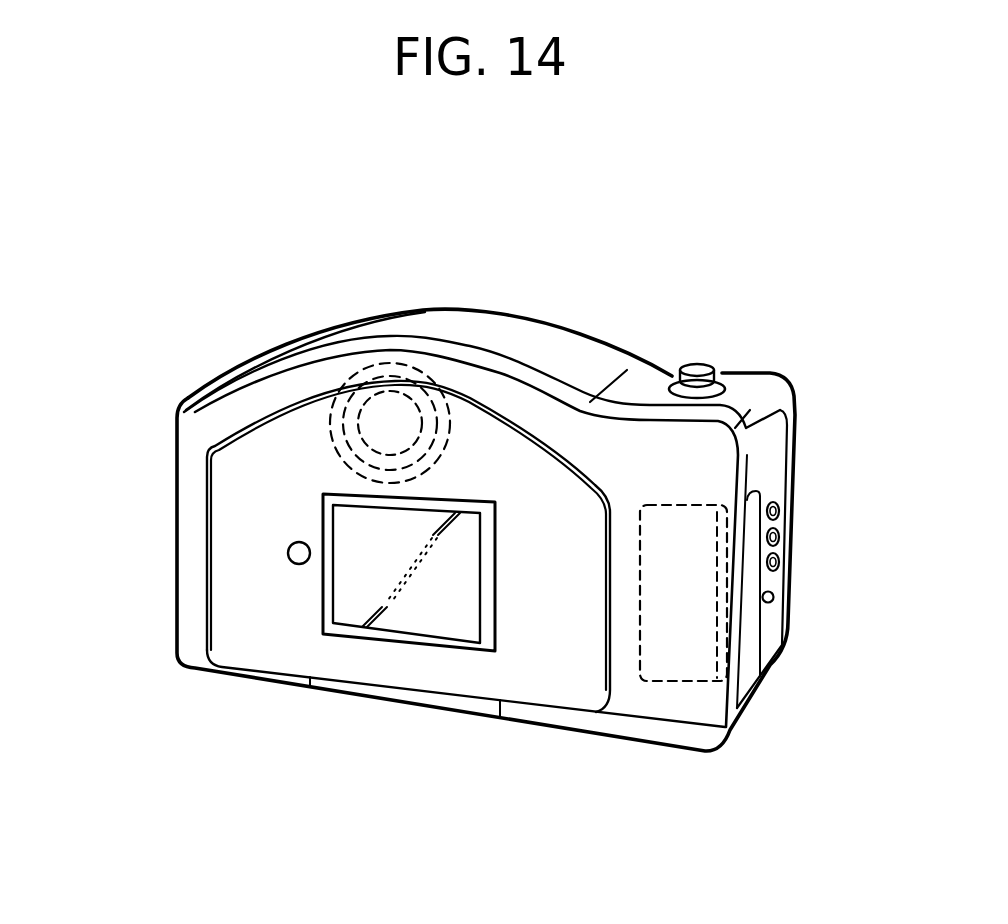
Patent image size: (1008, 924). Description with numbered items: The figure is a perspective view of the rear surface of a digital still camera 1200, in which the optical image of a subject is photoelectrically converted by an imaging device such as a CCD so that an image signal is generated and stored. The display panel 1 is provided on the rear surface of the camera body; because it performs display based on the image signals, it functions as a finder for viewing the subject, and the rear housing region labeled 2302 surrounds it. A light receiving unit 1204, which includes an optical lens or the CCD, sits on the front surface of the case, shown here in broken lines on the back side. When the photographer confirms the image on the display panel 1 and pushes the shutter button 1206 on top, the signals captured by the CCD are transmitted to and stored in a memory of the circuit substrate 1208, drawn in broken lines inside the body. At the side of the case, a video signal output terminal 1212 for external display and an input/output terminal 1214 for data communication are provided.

The digital still camera 1200 is at (597, 238).
The camera housing 2302 is at (181, 457).
The light receiving unit 1204 is at (436, 366).
The shutter button 1206 is at (697, 367).
The display panel 1 is at (450, 607).
The circuit substrate 1208 is at (652, 682).
The video signal output terminal 1212 is at (777, 500).
The input/output terminal 1214 is at (770, 603).